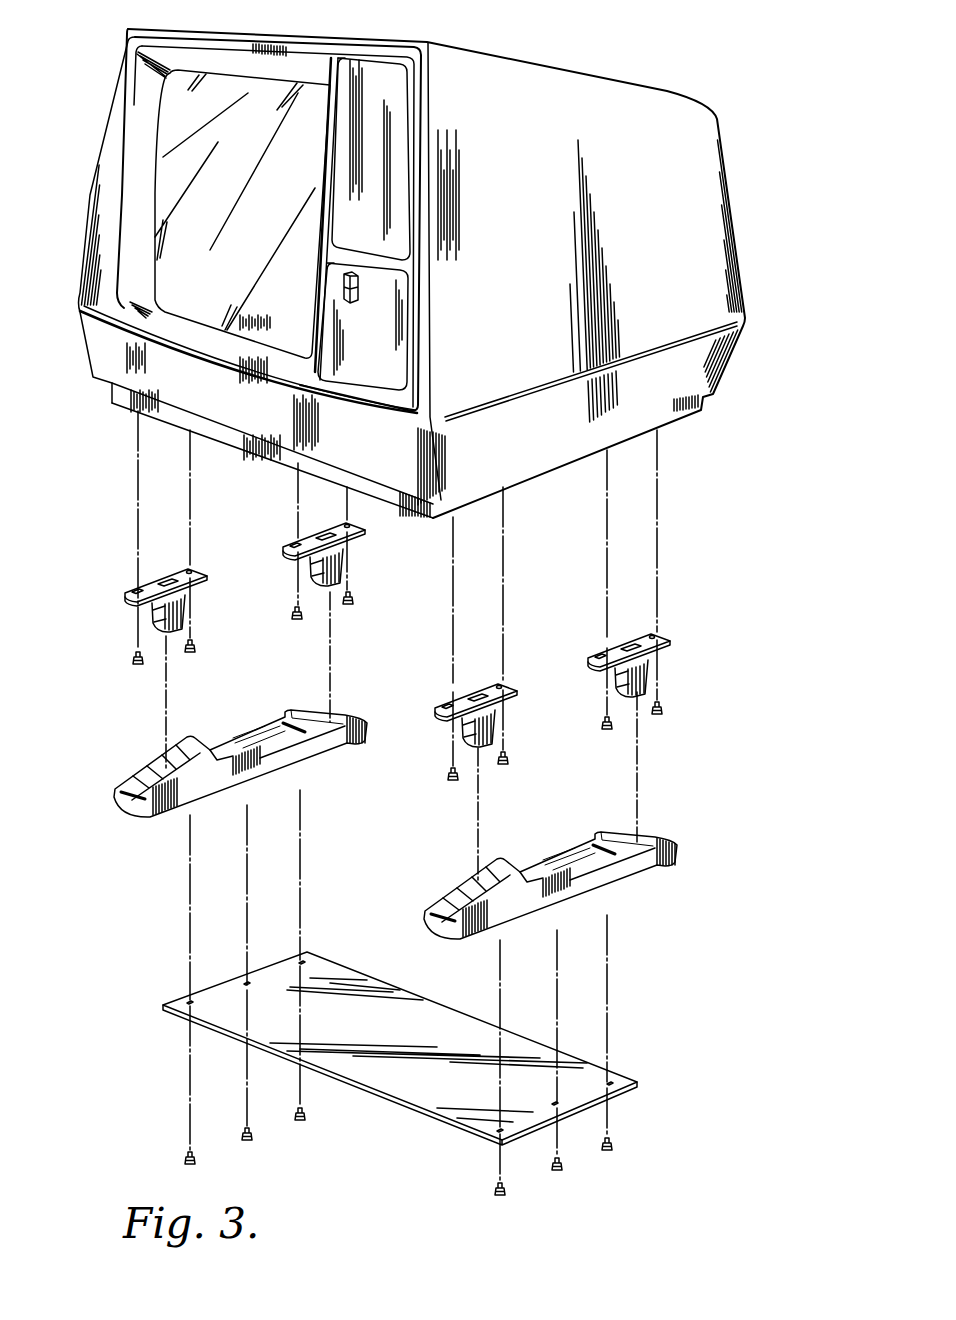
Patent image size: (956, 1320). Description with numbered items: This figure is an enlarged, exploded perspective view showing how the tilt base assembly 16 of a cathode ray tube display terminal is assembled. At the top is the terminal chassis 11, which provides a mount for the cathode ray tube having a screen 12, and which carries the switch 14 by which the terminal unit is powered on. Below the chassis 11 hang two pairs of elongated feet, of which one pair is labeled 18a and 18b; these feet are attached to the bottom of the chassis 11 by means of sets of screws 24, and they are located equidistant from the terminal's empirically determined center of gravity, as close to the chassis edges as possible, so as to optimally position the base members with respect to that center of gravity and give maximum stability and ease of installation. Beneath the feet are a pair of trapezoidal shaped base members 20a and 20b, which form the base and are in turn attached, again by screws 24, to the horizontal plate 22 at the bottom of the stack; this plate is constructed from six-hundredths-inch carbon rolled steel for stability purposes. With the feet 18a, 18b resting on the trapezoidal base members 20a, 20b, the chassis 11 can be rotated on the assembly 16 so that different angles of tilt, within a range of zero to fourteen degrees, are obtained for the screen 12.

The terminal chassis 11 is at (659, 97).
The screen 12 is at (198, 123).
The switch 14 is at (357, 300).
The tilt base assembly 16 is at (676, 757).
The elongated foot 18a is at (133, 592).
The elongated foot 18b is at (300, 543).
The trapezoidal shaped base member 20a is at (133, 768).
The trapezoidal shaped base member 20b is at (457, 892).
The horizontal plate 22 is at (392, 1087).
The screws 24 is at (136, 668).